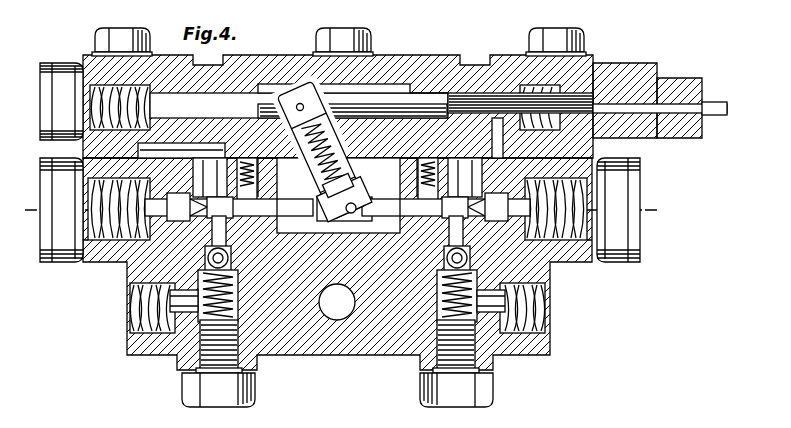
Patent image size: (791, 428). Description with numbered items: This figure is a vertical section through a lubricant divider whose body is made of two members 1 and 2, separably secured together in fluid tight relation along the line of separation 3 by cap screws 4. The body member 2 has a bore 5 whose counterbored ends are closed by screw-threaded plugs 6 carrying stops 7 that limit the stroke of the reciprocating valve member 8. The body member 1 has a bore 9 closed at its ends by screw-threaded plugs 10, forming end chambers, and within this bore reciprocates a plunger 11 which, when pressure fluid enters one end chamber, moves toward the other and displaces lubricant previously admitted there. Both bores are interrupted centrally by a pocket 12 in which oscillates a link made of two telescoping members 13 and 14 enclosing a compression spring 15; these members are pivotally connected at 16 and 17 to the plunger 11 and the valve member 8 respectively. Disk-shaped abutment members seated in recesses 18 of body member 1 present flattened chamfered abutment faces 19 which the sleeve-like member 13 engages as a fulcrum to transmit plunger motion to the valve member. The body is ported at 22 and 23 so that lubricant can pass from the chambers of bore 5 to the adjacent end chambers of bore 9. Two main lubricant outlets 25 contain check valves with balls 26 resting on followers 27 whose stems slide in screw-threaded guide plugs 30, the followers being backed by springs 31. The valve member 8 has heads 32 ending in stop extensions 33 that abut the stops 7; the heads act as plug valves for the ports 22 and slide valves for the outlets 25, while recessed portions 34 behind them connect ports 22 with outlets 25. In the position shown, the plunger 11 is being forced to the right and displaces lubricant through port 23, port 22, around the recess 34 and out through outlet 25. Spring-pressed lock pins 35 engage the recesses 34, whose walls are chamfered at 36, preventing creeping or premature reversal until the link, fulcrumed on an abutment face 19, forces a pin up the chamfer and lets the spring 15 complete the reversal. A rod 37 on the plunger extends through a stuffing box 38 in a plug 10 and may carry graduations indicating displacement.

The body member 1 is at (405, 92).
The body member 2 is at (343, 357).
The line of separation 3 is at (86, 156).
The cap screws 4 is at (94, 38).
The bore 5 is at (172, 292).
The screw-threaded plugs 6 is at (52, 226).
The stops 7 is at (135, 243).
The valve member 8 is at (376, 224).
The bore 9 is at (468, 95).
The screw-threaded plugs 10 is at (44, 106).
The plunger 11 is at (424, 100).
The pocket 12 is at (378, 84).
The telescoping member 13 is at (342, 143).
The telescoping member 14 is at (322, 185).
The spring 15 is at (332, 108).
The pivotal connection 16 is at (299, 103).
The pivotal connection 17 is at (350, 216).
The recesses 18 is at (420, 145).
The abutment faces 19 is at (338, 195).
The ports 22 is at (337, 177).
The ports 23 is at (181, 142).
The main lubricant outlets 25 is at (230, 257).
The balls 26 is at (134, 324).
The followers 27 is at (206, 300).
The screw-threaded guide plugs 30 is at (216, 398).
The springs 31 is at (180, 352).
The heads 32 is at (215, 230).
The stop extensions 33 is at (160, 240).
The recessed portions 34 is at (337, 207).
The lock pins 35 is at (245, 162).
The chamfer 36 is at (279, 220).
The rod 37 is at (726, 104).
The stuffing box 38 is at (652, 92).